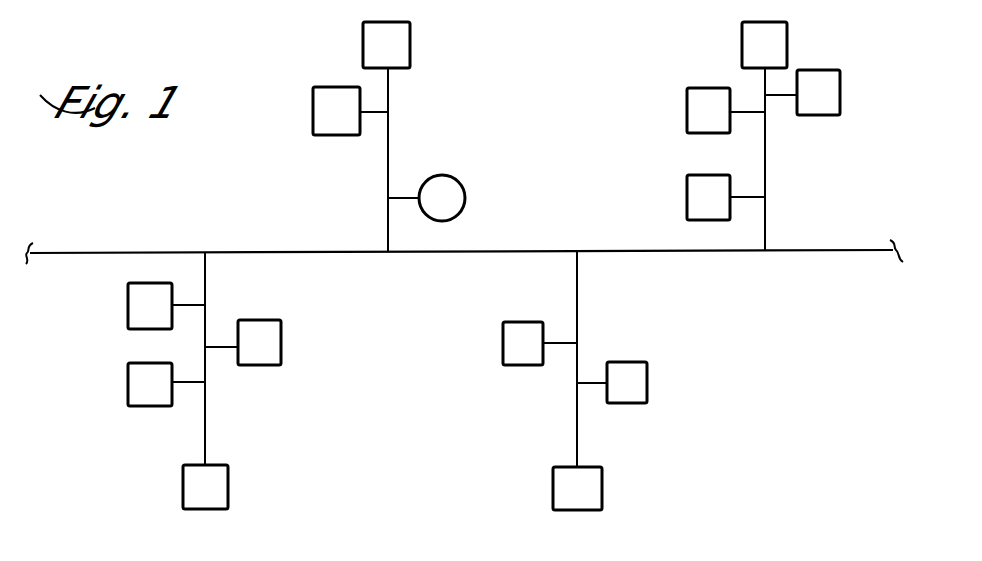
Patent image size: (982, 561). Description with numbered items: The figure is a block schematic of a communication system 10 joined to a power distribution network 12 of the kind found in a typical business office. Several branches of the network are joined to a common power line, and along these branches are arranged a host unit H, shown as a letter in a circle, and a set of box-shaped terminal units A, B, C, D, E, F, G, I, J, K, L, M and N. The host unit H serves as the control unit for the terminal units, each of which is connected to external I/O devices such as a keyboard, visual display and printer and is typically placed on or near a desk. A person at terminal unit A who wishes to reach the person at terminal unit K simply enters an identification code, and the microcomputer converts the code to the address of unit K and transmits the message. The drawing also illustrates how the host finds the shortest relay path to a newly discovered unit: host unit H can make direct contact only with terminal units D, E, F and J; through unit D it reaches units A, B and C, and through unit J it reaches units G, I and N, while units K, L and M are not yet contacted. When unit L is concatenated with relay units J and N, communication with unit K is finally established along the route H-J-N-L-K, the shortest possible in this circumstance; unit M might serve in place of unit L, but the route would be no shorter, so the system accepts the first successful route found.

The communication system 10 is at (228, 202).
The power distribution network 12 is at (353, 254).
The terminal unit A is at (205, 487).
The terminal unit B is at (166, 384).
The terminal unit C is at (243, 342).
The terminal unit D is at (166, 306).
The terminal unit E is at (386, 45).
The terminal unit F is at (350, 111).
The terminal unit G is at (577, 488).
The host unit H is at (426, 198).
The terminal unit I is at (612, 382).
The terminal unit J is at (540, 343).
The terminal unit K is at (764, 45).
The terminal unit L is at (726, 110).
The terminal unit M is at (802, 92).
The terminal unit N is at (726, 197).